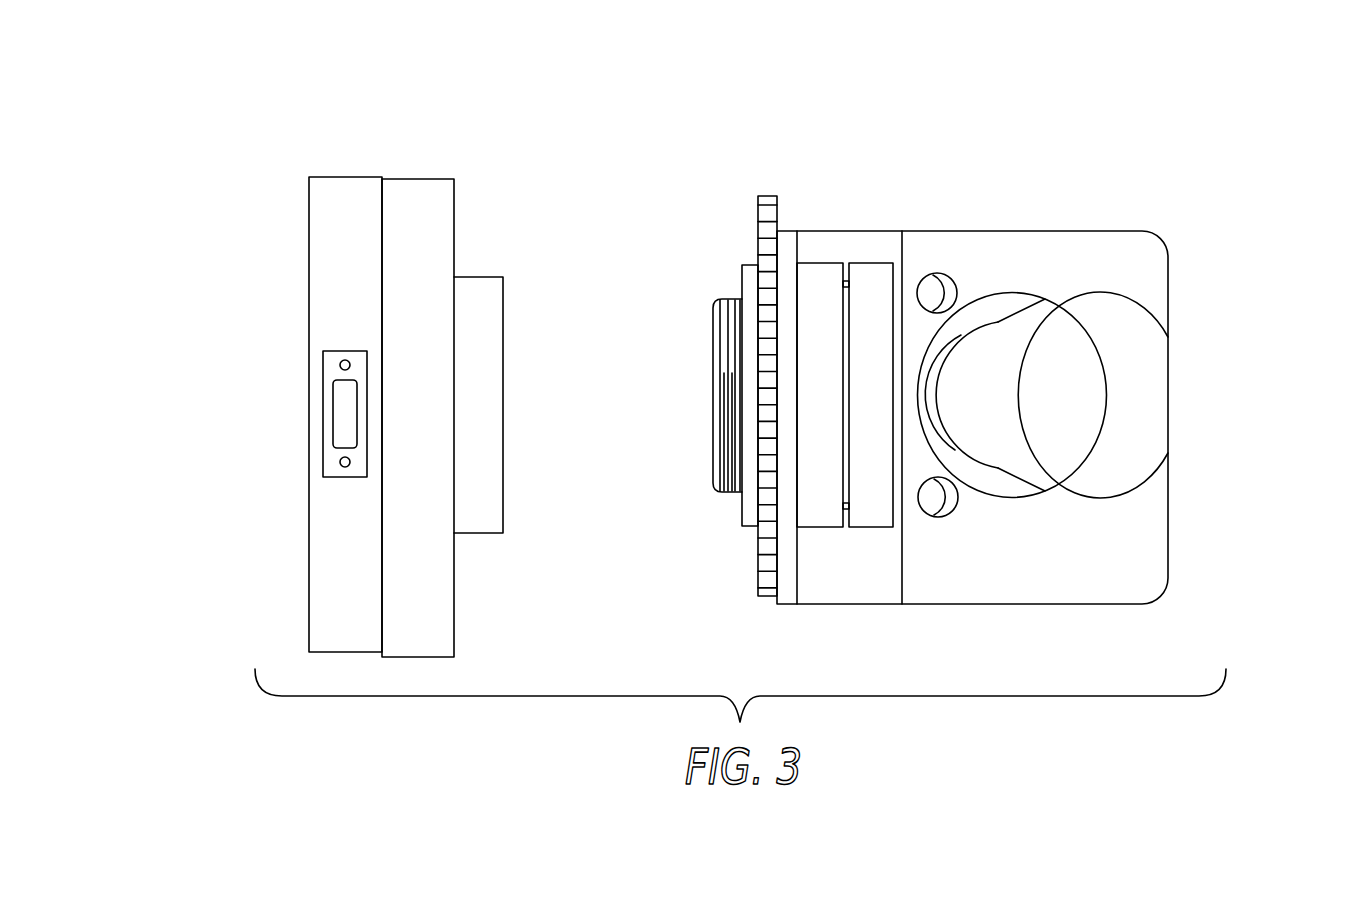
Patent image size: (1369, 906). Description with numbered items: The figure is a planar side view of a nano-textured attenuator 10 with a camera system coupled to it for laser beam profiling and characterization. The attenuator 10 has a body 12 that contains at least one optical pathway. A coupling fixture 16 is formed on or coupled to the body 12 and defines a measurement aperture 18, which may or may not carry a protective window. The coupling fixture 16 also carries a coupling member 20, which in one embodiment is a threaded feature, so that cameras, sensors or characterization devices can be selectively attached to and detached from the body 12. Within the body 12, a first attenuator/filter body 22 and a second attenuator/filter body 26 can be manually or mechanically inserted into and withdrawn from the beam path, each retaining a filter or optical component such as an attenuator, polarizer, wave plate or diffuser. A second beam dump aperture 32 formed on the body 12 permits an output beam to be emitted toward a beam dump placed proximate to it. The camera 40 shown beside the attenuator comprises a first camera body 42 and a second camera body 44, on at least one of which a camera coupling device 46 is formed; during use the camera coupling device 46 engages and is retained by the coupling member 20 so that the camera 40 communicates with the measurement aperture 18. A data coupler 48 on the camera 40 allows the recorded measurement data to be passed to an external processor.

The nano-textured attenuator 10 is at (1241, 219).
The body 12 is at (1137, 230).
The coupling fixture 16 is at (765, 195).
The measurement aperture 18 is at (713, 385).
The coupling member 20 is at (718, 322).
The first attenuator/filter body 22 is at (815, 273).
The second attenuator/filter body 26 is at (875, 278).
The second beam dump aperture 32 is at (980, 295).
The camera 40 is at (238, 157).
The first camera body 42 is at (337, 177).
The second camera body 44 is at (425, 179).
The camera coupling device 46 is at (490, 277).
The data coupler 48 is at (333, 403).